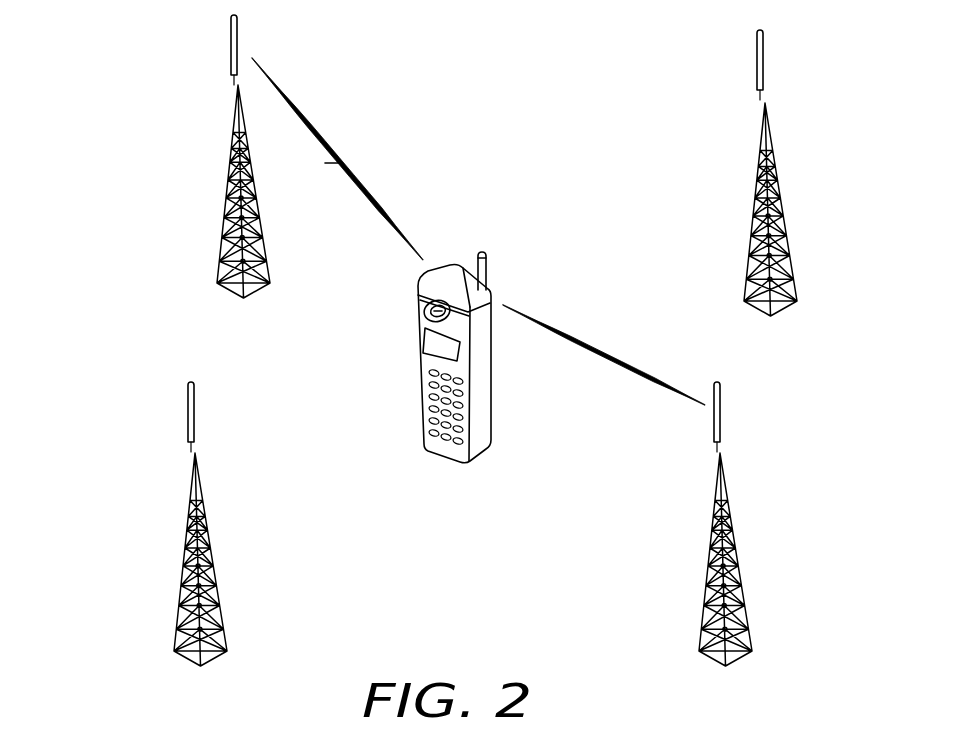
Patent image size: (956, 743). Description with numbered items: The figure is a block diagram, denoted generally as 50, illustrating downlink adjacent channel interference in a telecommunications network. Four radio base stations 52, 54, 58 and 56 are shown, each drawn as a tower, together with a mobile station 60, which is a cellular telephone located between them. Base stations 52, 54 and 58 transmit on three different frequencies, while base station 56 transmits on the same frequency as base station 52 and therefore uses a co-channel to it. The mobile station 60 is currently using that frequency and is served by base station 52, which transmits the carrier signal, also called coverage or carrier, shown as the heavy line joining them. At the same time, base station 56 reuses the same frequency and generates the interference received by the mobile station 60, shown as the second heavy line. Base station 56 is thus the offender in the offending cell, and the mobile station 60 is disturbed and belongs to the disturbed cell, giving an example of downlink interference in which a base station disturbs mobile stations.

The block diagram 50 is at (104, 101).
The radio base station 52 is at (221, 225).
The radio base station 54 is at (786, 237).
The radio base station 56 is at (745, 587).
The radio base station 58 is at (178, 588).
The mobile station 60 is at (491, 393).